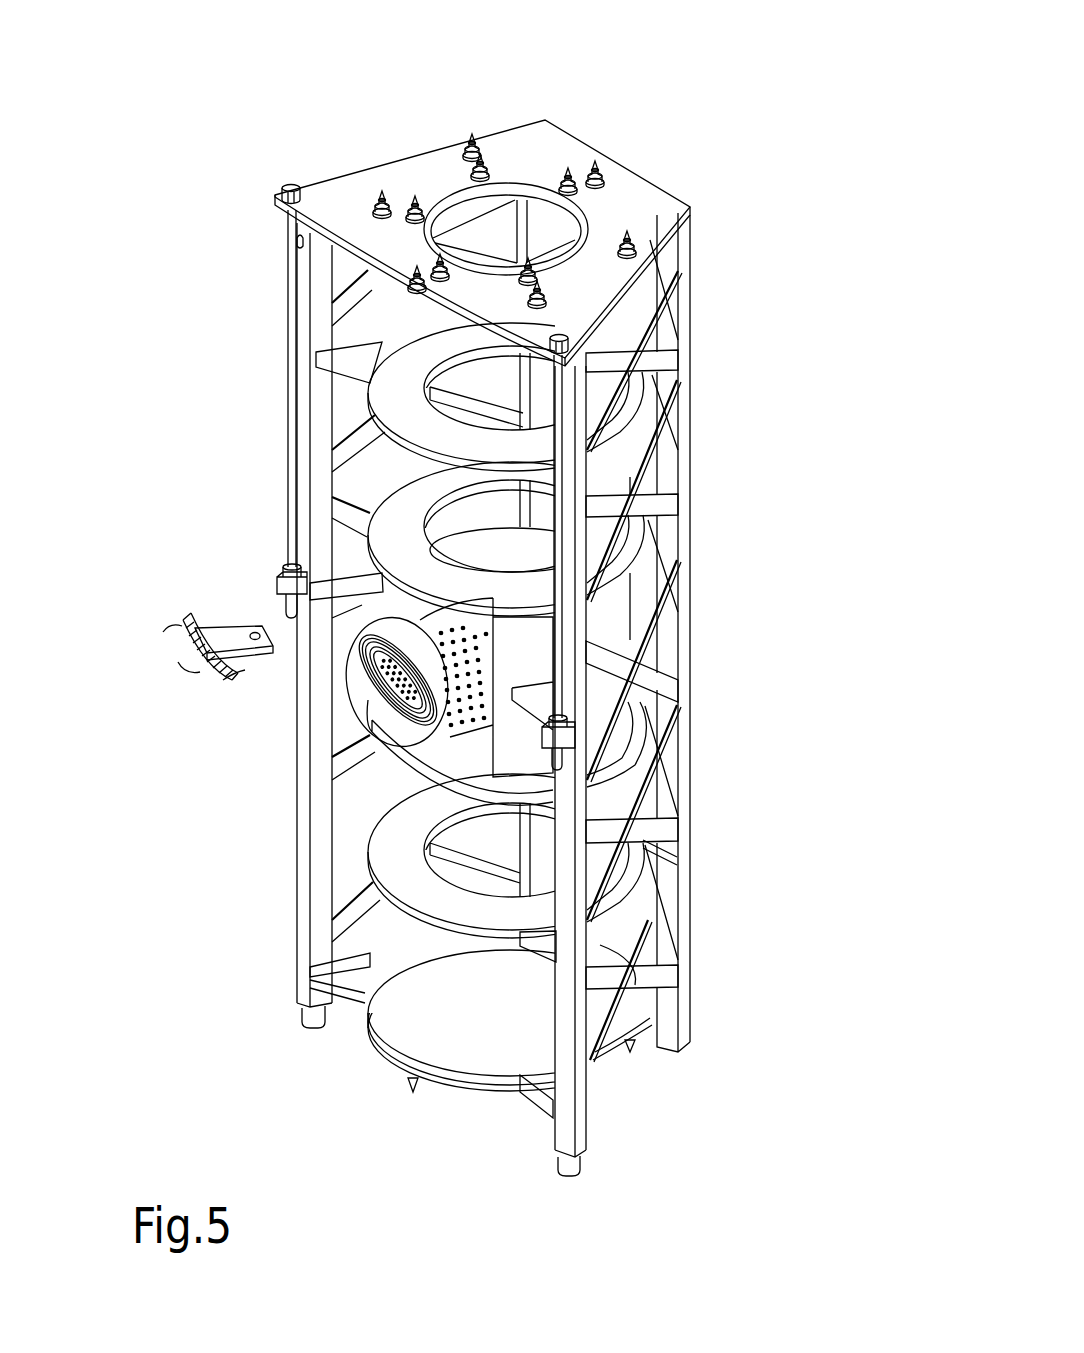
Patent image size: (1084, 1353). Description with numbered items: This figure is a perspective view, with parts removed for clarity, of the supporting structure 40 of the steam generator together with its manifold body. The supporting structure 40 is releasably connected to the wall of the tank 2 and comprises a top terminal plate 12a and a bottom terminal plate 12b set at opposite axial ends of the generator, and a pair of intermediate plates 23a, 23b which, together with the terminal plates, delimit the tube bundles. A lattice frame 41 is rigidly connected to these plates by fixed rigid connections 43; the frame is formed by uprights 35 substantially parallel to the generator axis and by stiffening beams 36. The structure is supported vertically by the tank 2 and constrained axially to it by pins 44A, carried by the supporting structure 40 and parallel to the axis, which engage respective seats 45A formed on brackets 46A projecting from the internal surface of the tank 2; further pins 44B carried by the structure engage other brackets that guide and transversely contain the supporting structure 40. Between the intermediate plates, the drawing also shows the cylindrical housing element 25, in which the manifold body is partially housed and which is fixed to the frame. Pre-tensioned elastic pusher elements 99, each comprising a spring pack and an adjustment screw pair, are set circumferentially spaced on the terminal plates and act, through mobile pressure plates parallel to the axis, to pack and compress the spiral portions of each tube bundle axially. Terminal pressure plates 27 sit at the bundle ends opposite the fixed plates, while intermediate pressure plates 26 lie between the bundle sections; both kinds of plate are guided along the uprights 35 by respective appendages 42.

The tank 2 is at (178, 662).
The top terminal plate 12a is at (598, 277).
The bottom terminal plate 12b is at (503, 1090).
The intermediate plate 23a is at (633, 530).
The intermediate plate 23b is at (420, 757).
The centrifuge drum 25 is at (483, 632).
The intermediate pressure plate 26 is at (640, 405).
The terminal pressure plate 27 is at (520, 200).
The upright 35 is at (537, 243).
The stiffening beam 36 is at (672, 582).
The supporting structure 40 is at (680, 798).
The lattice frame 41 is at (322, 480).
The appendage 42 is at (347, 357).
The fixed rigid connection 43 is at (357, 590).
The pin 44A is at (290, 608).
The pin 44B is at (302, 240).
The seat 45A is at (255, 630).
The bracket 46A is at (218, 640).
The pre-tensioned elastic pusher element 99 is at (515, 200).